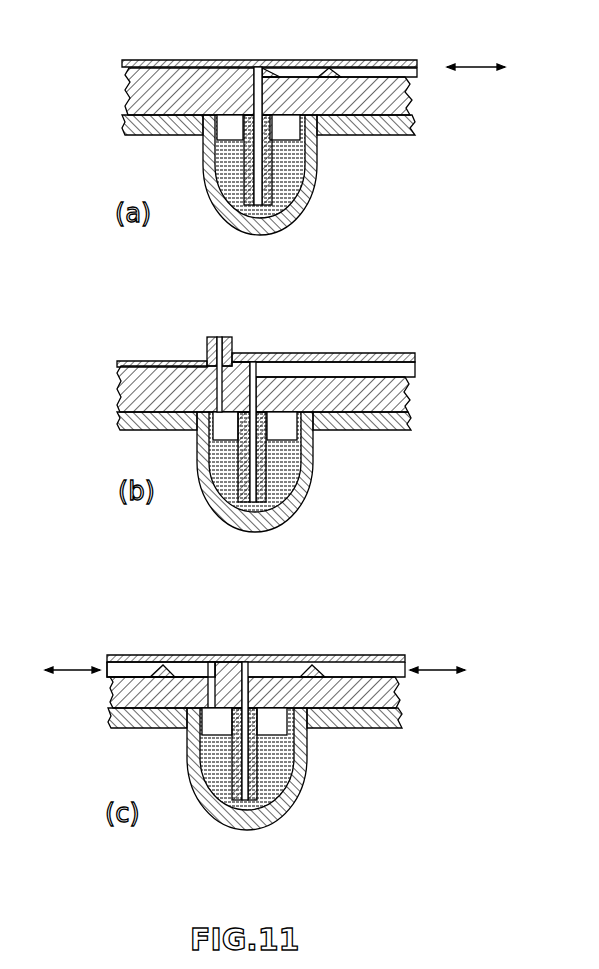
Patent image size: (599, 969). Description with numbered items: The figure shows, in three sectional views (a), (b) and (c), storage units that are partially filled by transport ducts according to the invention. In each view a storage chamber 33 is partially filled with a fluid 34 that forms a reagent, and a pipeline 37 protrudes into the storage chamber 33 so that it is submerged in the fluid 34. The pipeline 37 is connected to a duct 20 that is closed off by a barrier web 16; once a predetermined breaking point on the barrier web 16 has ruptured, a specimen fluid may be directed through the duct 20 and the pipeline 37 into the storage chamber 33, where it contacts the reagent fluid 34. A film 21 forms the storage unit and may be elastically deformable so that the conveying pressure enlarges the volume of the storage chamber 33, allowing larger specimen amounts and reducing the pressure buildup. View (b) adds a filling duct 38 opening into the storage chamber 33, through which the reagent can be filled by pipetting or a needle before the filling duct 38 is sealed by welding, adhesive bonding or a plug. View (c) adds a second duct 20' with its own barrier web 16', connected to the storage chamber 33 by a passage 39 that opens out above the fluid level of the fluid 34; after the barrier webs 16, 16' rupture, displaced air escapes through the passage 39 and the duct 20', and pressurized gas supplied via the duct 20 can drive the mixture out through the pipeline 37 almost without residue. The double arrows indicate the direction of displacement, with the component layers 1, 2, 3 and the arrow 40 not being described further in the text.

The body / first component 1 is at (126, 85).
The second component / lower layer 2 is at (383, 120).
The cover layer / film 3 is at (179, 61).
The barrier web 16 is at (343, 345).
The barrier web 16' is at (185, 645).
The duct 20 is at (356, 339).
The second duct 20' is at (151, 637).
The film 21 is at (301, 216).
The storage chamber 33 is at (291, 131).
The fluid 34 is at (233, 178).
The pipeline 37 is at (257, 107).
The filling duct 38 is at (210, 370).
The passage 39 is at (148, 730).
The displacement direction arrow 40 is at (62, 670).